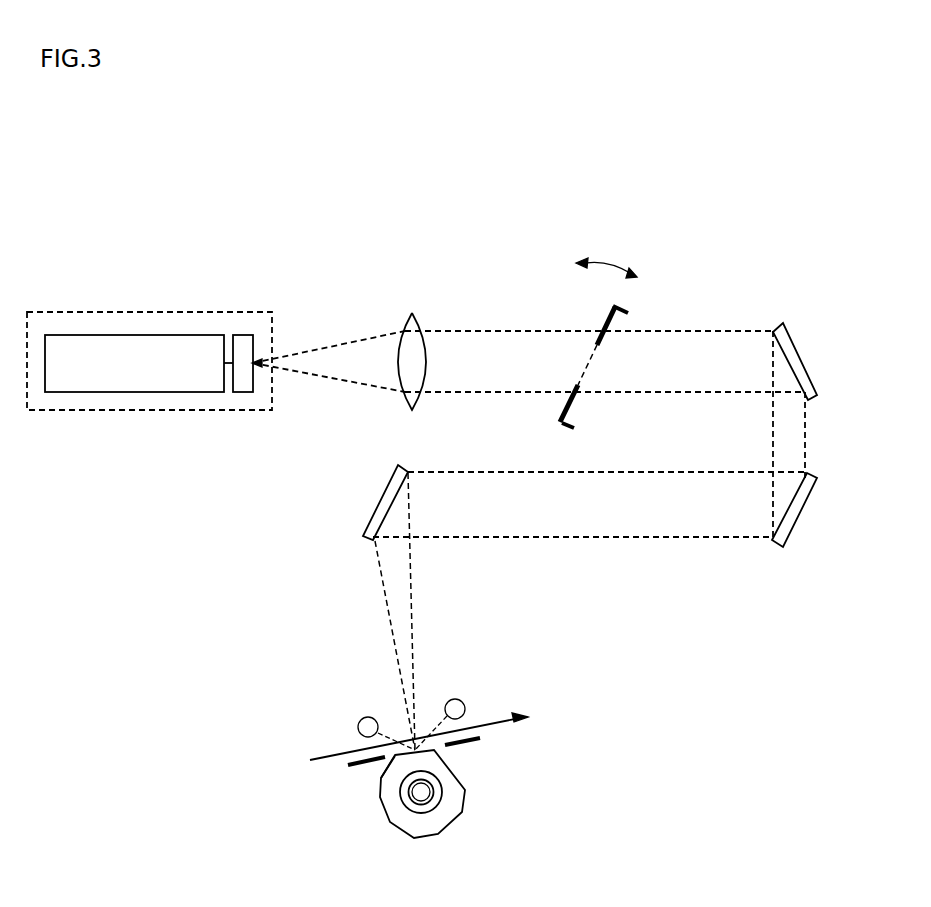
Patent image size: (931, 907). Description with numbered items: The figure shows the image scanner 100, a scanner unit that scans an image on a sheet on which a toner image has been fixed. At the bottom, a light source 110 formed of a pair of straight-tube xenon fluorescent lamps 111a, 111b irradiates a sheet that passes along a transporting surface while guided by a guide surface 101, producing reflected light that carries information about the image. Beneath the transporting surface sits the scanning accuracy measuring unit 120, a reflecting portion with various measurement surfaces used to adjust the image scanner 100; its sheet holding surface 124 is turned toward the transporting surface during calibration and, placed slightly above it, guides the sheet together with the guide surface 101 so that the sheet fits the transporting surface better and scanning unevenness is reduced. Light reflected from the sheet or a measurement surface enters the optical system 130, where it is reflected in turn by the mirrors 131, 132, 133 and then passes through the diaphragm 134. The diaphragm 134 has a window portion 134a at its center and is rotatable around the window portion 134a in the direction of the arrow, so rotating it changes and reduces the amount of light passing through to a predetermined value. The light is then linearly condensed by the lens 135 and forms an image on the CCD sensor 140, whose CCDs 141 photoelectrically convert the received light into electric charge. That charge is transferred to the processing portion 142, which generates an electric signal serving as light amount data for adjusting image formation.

The image scanner 100 is at (527, 214).
The guide surface 101 is at (470, 743).
The light source 110 is at (366, 661).
The xenon fluorescent lamp 111a is at (358, 720).
The xenon fluorescent lamp 111b is at (463, 700).
The scanning accuracy measuring unit 120 is at (447, 828).
The sheet holding surface 124 is at (388, 773).
The optical system 130 is at (639, 558).
The mirror 131 is at (390, 472).
The mirror 132 is at (776, 548).
The mirror 133 is at (775, 320).
The diaphragm 134 is at (620, 305).
The window portion 134a is at (592, 362).
The lens 135 is at (412, 312).
The CCD sensor 140 is at (145, 311).
The CCDs 141 is at (245, 334).
The processing portion 142 is at (192, 334).